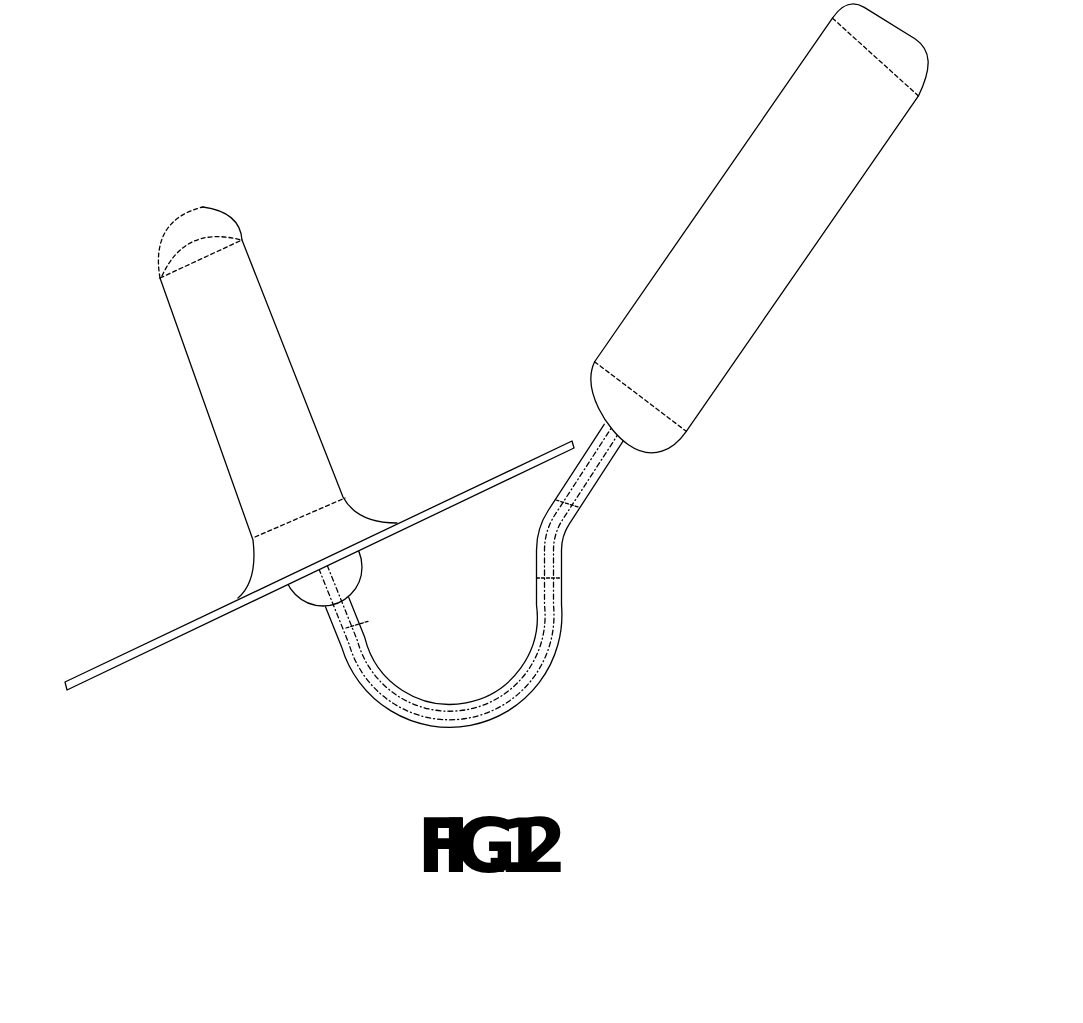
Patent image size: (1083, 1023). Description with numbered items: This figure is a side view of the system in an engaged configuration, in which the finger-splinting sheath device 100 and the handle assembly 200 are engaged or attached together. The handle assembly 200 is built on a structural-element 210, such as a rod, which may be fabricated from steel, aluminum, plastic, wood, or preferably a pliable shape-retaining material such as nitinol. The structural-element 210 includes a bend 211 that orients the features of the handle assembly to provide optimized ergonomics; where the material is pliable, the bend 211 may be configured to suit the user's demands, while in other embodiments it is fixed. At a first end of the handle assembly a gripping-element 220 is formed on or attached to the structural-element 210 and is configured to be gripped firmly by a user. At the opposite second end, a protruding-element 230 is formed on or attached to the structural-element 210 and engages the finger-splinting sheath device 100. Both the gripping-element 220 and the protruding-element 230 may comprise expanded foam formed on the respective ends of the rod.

The finger-splinting sheath device 100 is at (102, 224).
The handle assembly 200 is at (508, 253).
The structural-element 210 is at (600, 480).
The bend 211 is at (490, 694).
The gripping-element 220 is at (746, 165).
The protruding-element 230 is at (303, 598).